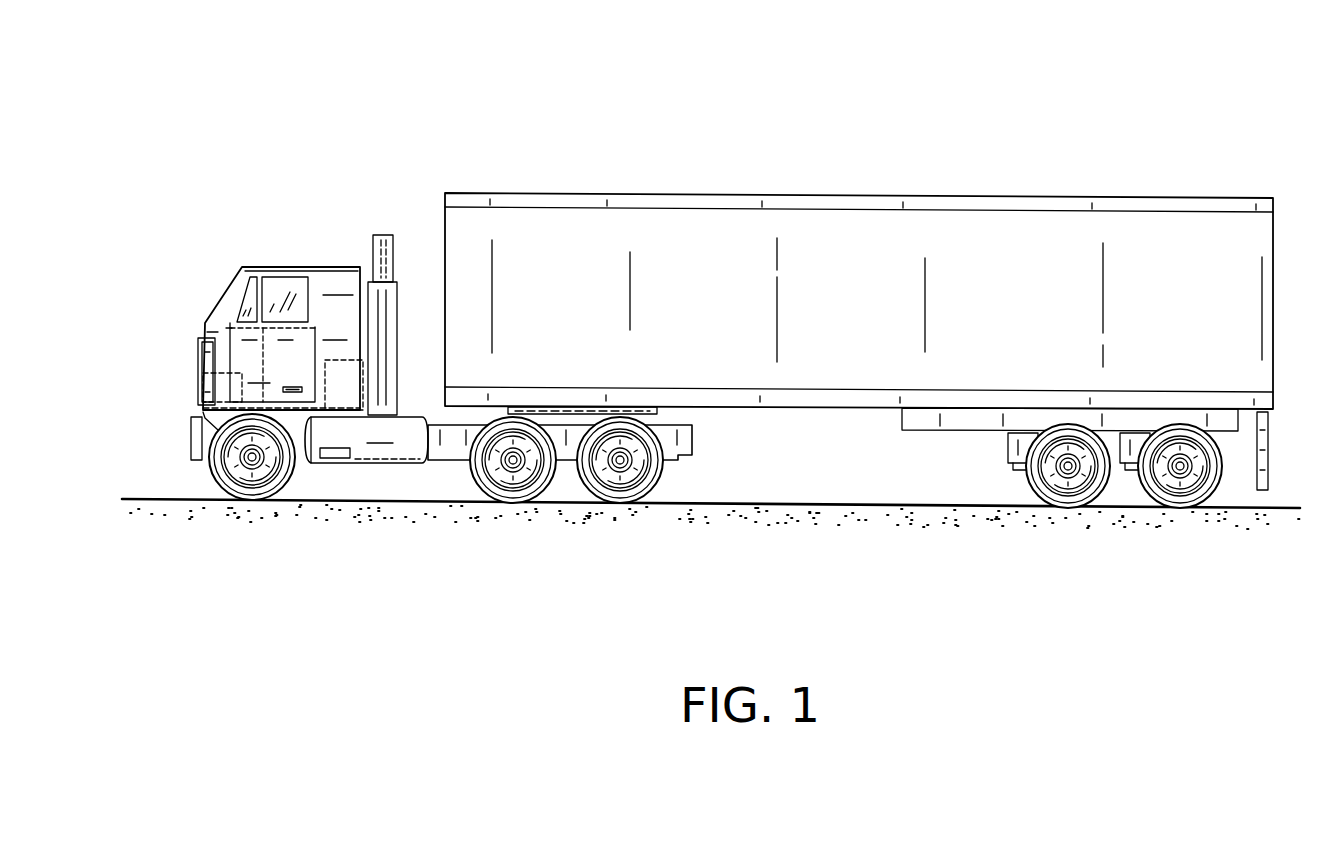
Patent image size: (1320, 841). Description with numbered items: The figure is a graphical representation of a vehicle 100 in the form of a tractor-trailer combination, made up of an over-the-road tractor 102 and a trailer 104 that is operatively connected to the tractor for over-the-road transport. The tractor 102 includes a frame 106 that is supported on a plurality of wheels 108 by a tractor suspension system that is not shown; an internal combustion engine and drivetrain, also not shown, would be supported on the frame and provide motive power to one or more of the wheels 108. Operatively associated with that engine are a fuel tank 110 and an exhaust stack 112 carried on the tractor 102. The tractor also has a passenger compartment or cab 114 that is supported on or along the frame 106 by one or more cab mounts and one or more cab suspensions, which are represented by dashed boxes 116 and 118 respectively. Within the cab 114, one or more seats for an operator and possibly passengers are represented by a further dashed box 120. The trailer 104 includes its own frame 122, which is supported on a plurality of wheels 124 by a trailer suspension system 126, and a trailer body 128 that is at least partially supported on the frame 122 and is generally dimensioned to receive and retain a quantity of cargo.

The vehicle 100 is at (328, 137).
The tractor 102 is at (176, 268).
The trailer 104 is at (557, 154).
The frame 106 is at (453, 450).
The wheels 108 is at (257, 495).
The fuel tank 110 is at (385, 450).
The exhaust stack 112 is at (387, 237).
The cab 114 is at (272, 267).
The cab mounts 116 is at (205, 382).
The cab suspensions 118 is at (337, 390).
The seats 120 is at (325, 335).
The frame 122 is at (955, 418).
The wheels 124 is at (1070, 500).
The trailer suspension system 126 is at (1013, 482).
The trailer body 128 is at (840, 233).